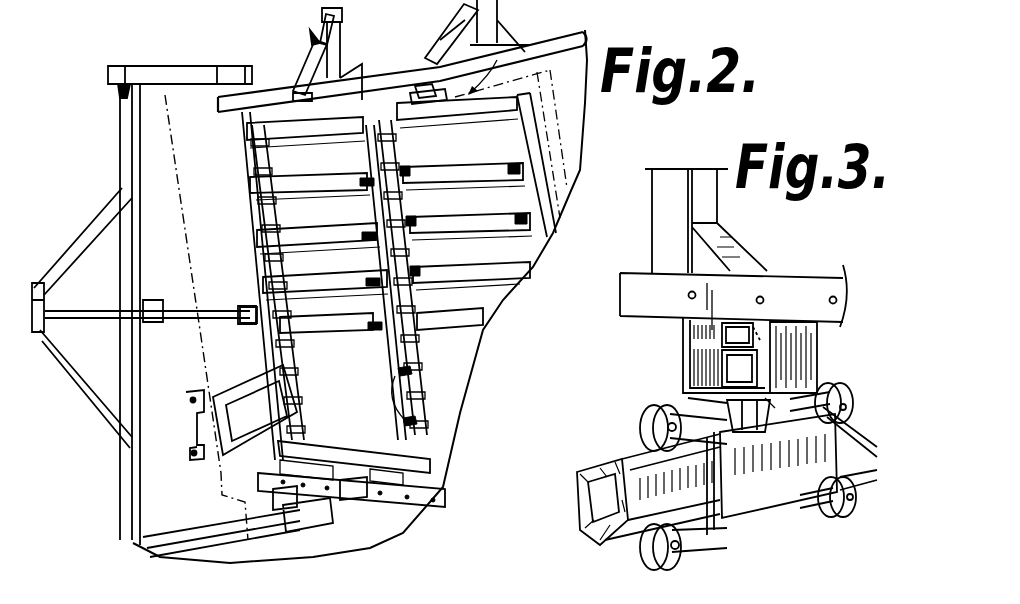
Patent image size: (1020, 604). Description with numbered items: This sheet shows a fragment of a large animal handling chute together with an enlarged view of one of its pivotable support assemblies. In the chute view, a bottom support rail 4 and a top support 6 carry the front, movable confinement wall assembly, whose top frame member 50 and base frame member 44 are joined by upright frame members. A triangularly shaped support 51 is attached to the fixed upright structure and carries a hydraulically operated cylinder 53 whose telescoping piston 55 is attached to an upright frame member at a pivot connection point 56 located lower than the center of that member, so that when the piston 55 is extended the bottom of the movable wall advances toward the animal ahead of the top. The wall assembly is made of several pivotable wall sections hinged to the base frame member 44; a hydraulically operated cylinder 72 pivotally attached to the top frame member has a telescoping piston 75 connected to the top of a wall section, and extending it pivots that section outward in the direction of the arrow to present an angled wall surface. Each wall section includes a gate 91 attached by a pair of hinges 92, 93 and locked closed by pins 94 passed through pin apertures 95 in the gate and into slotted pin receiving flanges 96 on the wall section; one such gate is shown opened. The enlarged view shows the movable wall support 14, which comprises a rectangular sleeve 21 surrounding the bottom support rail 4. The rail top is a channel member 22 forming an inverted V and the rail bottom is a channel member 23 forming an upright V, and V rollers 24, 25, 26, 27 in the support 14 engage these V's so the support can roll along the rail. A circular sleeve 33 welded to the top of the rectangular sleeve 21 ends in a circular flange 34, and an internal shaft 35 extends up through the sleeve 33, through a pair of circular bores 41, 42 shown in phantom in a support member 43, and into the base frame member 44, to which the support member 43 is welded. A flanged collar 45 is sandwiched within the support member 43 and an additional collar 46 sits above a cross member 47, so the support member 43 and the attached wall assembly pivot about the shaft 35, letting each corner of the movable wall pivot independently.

In FIG. 2, the bottom support rail 4 is at (193, 543).
In FIG. 2, the top support 6 is at (128, 66).
In FIG. 2, the movable wall support 14 is at (315, 525).
In FIG. 3, the movable wall support 14 is at (607, 352).
In FIG. 3, the rectangular sleeve 21 is at (816, 474).
In FIG. 3, the channel member 22 is at (639, 494).
In FIG. 3, the channel member 23 is at (607, 540).
In FIG. 3, the V roller 24 is at (643, 413).
In FIG. 3, the V roller 25 is at (847, 393).
In FIG. 3, the V roller 26 is at (647, 560).
In FIG. 3, the V roller 27 is at (847, 513).
In FIG. 3, the circular sleeve 33 is at (697, 400).
In FIG. 3, the circular flange 34 is at (780, 397).
In FIG. 3, the internal shaft 35 is at (735, 366).
In FIG. 3, the circular bore 41 is at (754, 330).
In FIG. 3, the circular bore 42 is at (738, 467).
In FIG. 3, the support member 43 is at (817, 362).
In FIG. 2, the base frame member 44 is at (417, 500).
In FIG. 3, the base frame member 44 is at (627, 297).
In FIG. 3, the flanged collar 45 is at (720, 350).
In FIG. 3, the collar 46 is at (750, 323).
In FIG. 3, the cross member 47 is at (704, 342).
In FIG. 2, the top frame member 50 is at (402, 242).
In FIG. 2, the triangularly shaped support 51 is at (70, 225).
In FIG. 2, the hydraulically operated cylinder 53 is at (103, 295).
In FIG. 2, the telescoping piston 55 is at (207, 315).
In FIG. 2, the pivot connection point 56 is at (246, 324).
In FIG. 2, the hydraulically operated cylinder 72 is at (297, 67).
In FIG. 2, the telescoping piston 75 is at (423, 66).
In FIG. 2, the gate 91 is at (176, 412).
In FIG. 2, the hinge 92 is at (272, 405).
In FIG. 2, the hinge 93 is at (293, 418).
In FIG. 2, the pin 94 is at (376, 335).
In FIG. 2, the pin aperture 95 is at (185, 406).
In FIG. 2, the pin receiving flange 96 is at (400, 371).